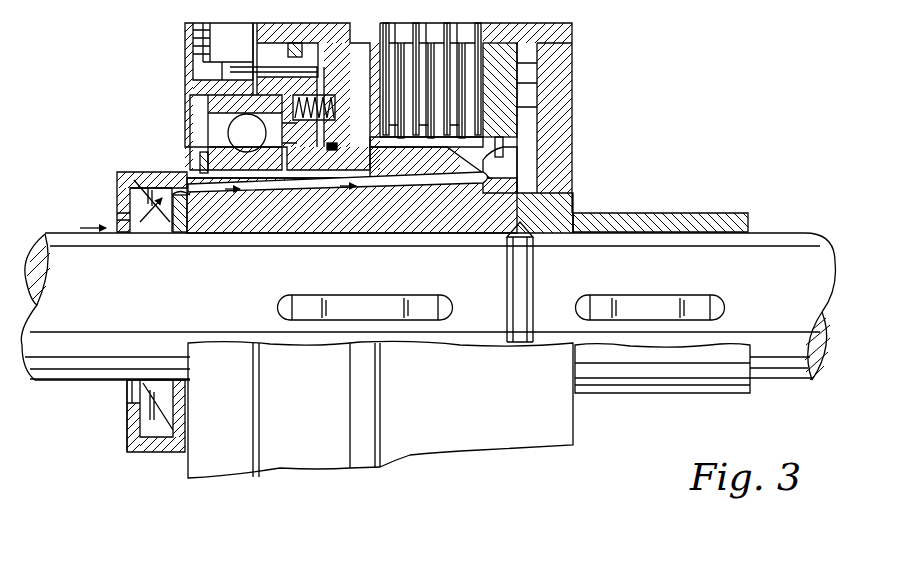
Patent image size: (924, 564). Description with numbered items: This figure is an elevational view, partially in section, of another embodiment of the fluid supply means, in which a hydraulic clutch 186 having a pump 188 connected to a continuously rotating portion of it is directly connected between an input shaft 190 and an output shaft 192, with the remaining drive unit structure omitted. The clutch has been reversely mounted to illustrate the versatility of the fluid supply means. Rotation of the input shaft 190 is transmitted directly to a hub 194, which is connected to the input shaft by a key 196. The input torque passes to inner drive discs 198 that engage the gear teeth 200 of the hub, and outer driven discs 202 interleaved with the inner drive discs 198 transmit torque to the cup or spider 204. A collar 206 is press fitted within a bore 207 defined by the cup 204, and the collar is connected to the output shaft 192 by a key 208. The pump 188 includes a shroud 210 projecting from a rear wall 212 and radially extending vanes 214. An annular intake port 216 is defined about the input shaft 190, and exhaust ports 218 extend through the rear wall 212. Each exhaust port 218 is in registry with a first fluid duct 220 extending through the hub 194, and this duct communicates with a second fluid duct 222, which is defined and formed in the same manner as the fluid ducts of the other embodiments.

The hydraulic clutch 186 is at (388, 475).
The pump 188 is at (157, 457).
The input shaft 190 is at (90, 365).
The output shaft 192 is at (780, 372).
The hub 194 is at (425, 234).
The key 196 is at (357, 305).
The inner drive discs 198 is at (400, 145).
The gear teeth 200 is at (520, 160).
The outer driven discs 202 is at (476, 8).
The cup or spider 204 is at (572, 46).
The collar 206 is at (708, 222).
The bore 207 is at (578, 203).
The key 208 is at (688, 298).
The shroud 210 is at (116, 195).
The rear wall 212 is at (186, 200).
The vanes 214 is at (142, 190).
The annular intake port 216 is at (128, 405).
The exhaust ports 218 is at (263, 203).
The first fluid duct 220 is at (338, 199).
The second fluid duct 222 is at (452, 165).